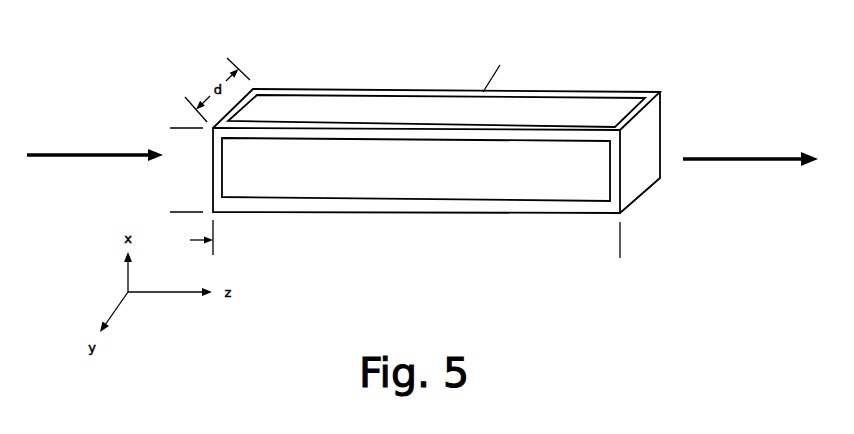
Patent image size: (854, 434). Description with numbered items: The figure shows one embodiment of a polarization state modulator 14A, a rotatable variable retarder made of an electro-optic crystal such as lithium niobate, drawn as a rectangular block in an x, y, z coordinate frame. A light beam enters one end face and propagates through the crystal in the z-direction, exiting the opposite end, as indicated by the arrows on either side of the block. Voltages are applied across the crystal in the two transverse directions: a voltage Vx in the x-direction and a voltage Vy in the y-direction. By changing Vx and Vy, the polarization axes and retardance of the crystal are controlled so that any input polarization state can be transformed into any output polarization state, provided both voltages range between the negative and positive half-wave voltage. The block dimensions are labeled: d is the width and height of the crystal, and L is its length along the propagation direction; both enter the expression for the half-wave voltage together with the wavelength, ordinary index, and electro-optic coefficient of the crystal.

The polarization state modulator 14A is at (346, 150).
The x-direction voltage Vx is at (445, 242).
The y-direction voltage Vy is at (425, 173).
The width and height of the crystal d is at (188, 130).
The length of the crystal L is at (628, 242).